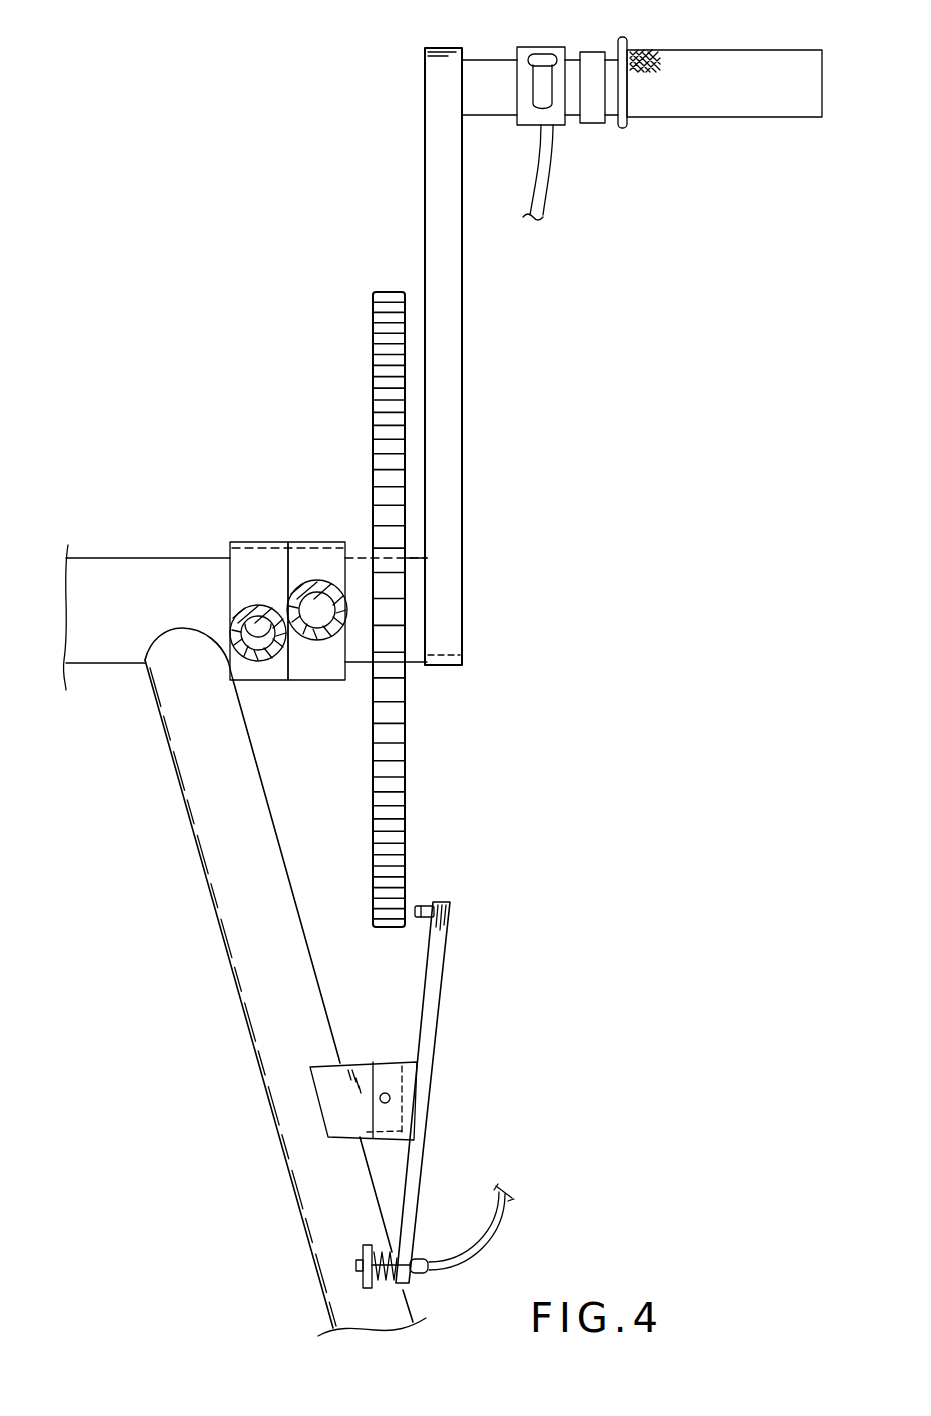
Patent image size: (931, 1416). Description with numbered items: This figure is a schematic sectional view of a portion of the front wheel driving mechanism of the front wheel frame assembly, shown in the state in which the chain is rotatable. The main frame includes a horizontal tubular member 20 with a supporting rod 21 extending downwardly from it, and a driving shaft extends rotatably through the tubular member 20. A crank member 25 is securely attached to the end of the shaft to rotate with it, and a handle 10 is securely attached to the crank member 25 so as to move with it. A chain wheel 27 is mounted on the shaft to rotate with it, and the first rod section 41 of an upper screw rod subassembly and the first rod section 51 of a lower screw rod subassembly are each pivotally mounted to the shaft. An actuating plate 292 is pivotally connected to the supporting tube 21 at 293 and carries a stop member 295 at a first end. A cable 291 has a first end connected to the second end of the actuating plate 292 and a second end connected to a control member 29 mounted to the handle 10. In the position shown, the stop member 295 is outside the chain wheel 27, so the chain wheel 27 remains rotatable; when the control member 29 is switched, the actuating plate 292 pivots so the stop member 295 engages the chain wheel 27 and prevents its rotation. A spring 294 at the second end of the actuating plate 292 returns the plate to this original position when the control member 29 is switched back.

The handle 10 is at (740, 107).
The horizontal tubular member 20 is at (155, 568).
The supporting rod 21 is at (180, 770).
The crank member 25 is at (425, 158).
The chain wheel 27 is at (408, 792).
The control member 29 is at (541, 50).
The first rod section 41 is at (313, 555).
The first rod section 51 is at (268, 552).
The cable 291 is at (548, 170).
The actuating plate 292 is at (440, 993).
The pivot connection 293 is at (385, 1092).
The spring 294 is at (387, 1287).
The stop member 295 is at (417, 903).